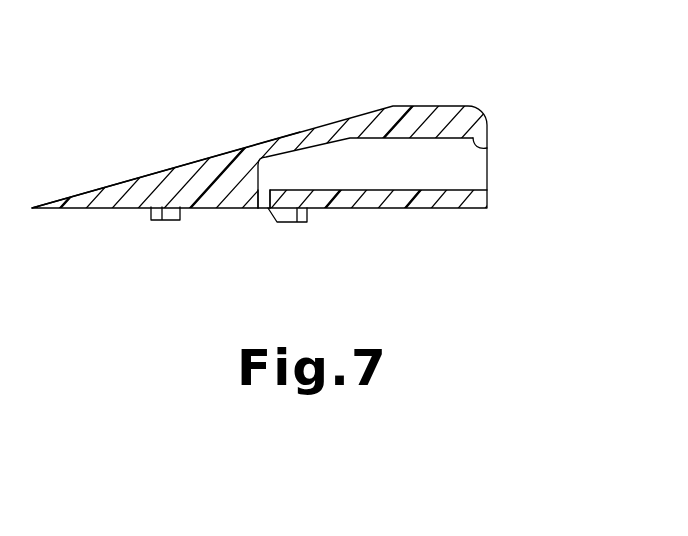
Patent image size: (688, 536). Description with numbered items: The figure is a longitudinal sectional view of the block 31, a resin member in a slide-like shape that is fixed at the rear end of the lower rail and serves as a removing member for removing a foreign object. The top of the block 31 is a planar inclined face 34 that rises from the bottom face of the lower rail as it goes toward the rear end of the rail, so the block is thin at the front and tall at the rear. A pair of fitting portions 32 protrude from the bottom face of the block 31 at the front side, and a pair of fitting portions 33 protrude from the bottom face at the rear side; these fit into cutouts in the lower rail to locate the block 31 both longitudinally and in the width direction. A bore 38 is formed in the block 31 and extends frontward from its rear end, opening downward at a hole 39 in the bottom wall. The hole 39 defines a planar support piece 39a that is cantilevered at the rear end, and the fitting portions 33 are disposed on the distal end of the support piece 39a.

The block 31 is at (409, 69).
The fitting portions 32 is at (170, 220).
The fitting portions 33 is at (292, 223).
The inclined face 34 is at (205, 156).
The bore 38 is at (487, 148).
The hole 39 is at (266, 207).
The support piece 39a is at (357, 208).